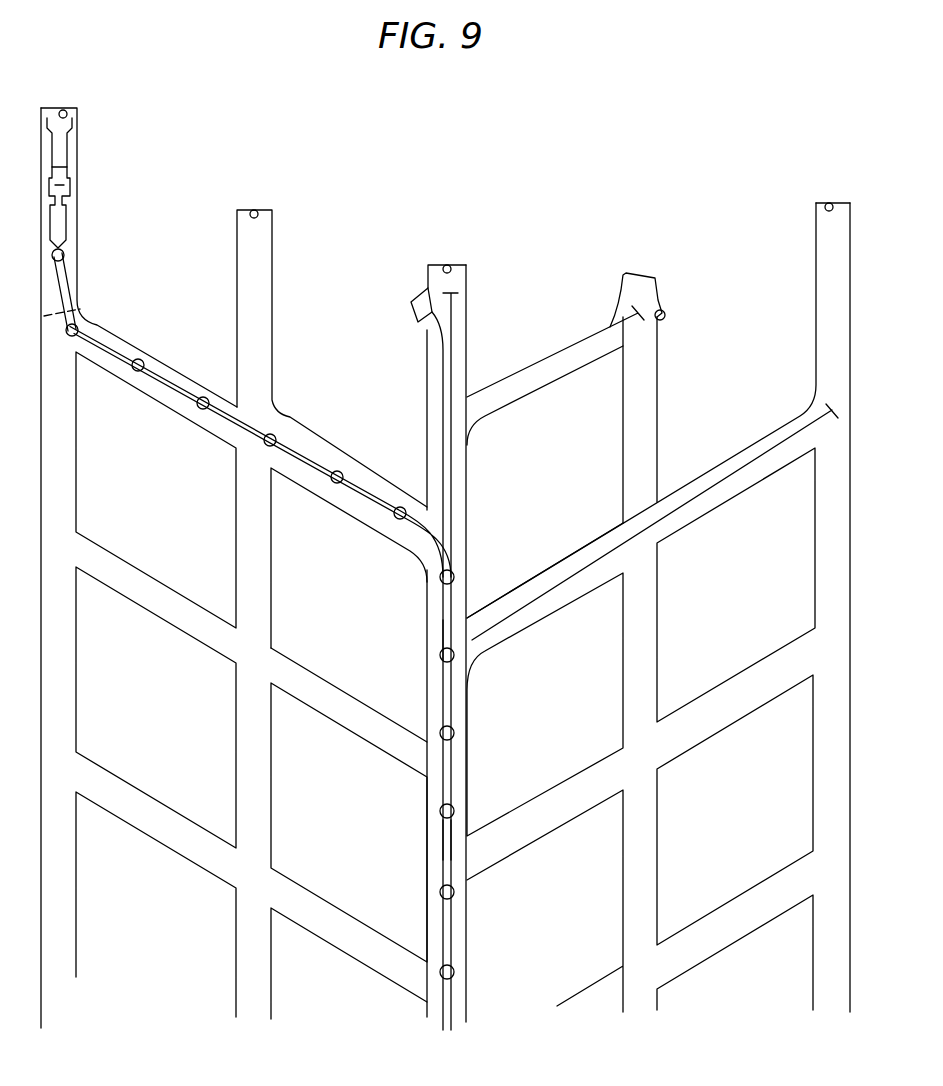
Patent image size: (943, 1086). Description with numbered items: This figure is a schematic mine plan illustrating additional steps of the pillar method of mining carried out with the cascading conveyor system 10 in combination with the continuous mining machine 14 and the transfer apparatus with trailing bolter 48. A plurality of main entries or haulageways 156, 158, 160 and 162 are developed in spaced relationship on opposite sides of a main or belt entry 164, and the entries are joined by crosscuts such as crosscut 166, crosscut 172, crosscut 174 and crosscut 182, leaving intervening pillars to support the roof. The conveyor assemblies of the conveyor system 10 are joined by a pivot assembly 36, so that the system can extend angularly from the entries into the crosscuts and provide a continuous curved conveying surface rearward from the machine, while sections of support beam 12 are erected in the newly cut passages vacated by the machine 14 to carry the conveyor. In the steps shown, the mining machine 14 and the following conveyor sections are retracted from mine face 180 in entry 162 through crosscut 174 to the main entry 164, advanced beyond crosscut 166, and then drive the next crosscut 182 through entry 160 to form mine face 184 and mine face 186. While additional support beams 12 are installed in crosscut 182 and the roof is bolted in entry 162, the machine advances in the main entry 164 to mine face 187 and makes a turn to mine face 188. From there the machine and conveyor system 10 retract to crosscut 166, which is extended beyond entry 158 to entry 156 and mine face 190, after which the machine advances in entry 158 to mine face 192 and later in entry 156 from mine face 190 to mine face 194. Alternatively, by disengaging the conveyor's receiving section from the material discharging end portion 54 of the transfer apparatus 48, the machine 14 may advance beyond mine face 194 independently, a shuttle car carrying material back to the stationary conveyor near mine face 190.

The cascading conveyor system 10 is at (440, 846).
The support beam 12 is at (452, 317).
The continuous mining machine 14 is at (58, 148).
The pivot assembly 36 is at (458, 741).
The transfer apparatus with trailing bolter 48 is at (60, 222).
The material discharging end portion 54 is at (64, 250).
The main entry 156 is at (68, 694).
The main entry 158 is at (258, 766).
The main entry 160 is at (640, 683).
The main entry 162 is at (832, 568).
The main or belt entry 164 is at (440, 637).
The crosscut 166 is at (318, 488).
The crosscut 172 is at (551, 600).
The crosscut 174 is at (747, 447).
The mine face 180 is at (829, 205).
The crosscut 182 is at (493, 420).
The mine face 184 is at (666, 316).
The mine face 186 is at (640, 285).
The mine face 187 is at (452, 268).
The mine face 188 is at (415, 312).
The mine face 190 is at (80, 318).
The mine face 192 is at (258, 212).
The mine face 194 is at (66, 112).